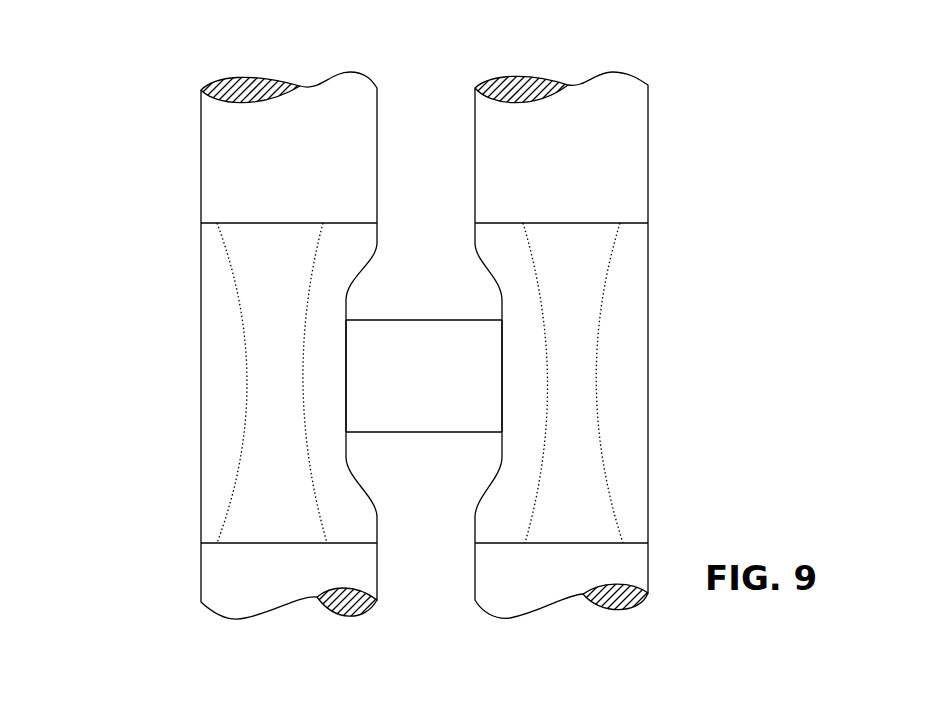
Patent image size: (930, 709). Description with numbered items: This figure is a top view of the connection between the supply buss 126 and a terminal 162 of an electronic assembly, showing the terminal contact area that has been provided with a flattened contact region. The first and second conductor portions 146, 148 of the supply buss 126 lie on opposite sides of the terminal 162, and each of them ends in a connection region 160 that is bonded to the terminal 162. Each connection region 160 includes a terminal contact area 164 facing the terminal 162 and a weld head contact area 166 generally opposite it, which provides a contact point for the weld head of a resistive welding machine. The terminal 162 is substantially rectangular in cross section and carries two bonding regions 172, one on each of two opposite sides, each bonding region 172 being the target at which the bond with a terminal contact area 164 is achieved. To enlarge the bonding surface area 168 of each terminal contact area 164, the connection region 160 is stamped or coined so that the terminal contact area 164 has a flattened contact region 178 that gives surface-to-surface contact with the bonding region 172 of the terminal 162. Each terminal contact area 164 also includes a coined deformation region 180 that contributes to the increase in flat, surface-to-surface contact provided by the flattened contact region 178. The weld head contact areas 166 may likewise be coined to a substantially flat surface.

The supply buss 126 is at (680, 118).
The first conductor portion 146 is at (192, 170).
The second conductor portion 148 is at (655, 190).
The connection region 160 is at (265, 516).
The terminal 162 is at (440, 387).
The terminal contact area 164 is at (433, 383).
The weld head contact area 166 is at (220, 380).
The bonding surface area 168 is at (424, 383).
The bonding region 172 is at (345, 398).
The flattened contact region 178 is at (349, 350).
The coined deformation region 180 is at (322, 478).